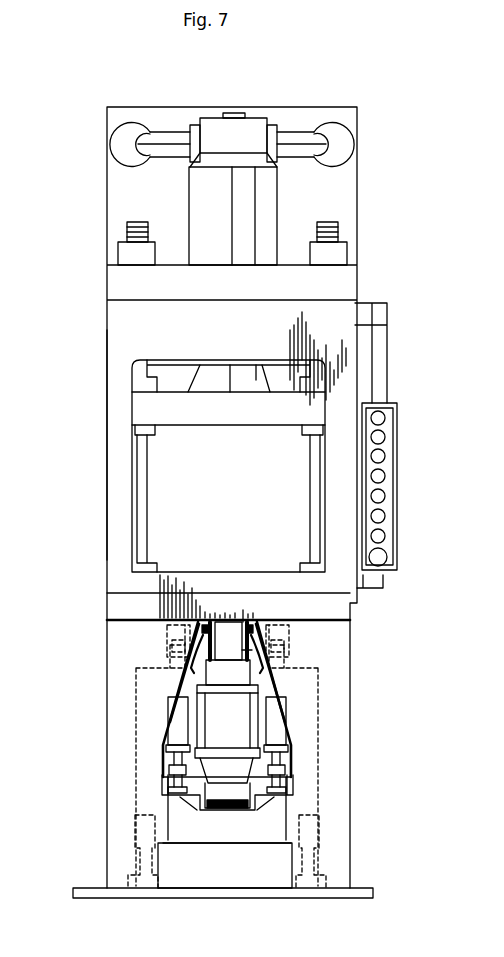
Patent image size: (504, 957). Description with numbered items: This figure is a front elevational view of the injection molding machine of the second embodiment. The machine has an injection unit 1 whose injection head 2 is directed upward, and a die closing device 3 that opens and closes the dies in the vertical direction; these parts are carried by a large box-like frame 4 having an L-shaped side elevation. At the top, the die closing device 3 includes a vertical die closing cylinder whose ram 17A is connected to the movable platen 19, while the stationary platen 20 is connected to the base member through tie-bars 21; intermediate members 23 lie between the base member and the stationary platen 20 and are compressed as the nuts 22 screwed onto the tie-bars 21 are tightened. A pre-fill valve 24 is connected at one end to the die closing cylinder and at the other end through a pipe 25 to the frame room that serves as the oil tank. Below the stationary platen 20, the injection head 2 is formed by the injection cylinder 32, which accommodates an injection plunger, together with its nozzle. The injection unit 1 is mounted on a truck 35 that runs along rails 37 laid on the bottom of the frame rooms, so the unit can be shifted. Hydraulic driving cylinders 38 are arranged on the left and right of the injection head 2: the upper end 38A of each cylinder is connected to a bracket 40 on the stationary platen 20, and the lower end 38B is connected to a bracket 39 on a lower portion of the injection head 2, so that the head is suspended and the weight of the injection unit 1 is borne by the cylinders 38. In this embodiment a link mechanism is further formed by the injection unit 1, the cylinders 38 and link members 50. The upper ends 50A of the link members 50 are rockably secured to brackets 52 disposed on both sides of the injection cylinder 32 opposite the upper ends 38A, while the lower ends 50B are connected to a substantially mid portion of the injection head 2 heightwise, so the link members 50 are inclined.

The injection unit 1 is at (238, 718).
The injection head 2 is at (165, 742).
The die closing device 3 is at (118, 376).
The frame 4 is at (350, 686).
The ram 17A is at (257, 378).
The movable platen 19 is at (195, 425).
The stationary platen 20 is at (107, 604).
The tie-bars 21 is at (147, 538).
The nuts 22 is at (118, 250).
The intermediate members 23 is at (107, 495).
The pre-fill valve 24 is at (191, 128).
The pipe 25 is at (159, 130).
The injection cylinder 32 is at (250, 655).
The truck 35 is at (262, 866).
The rails 37 is at (135, 866).
The hydraulic driving cylinders 38 is at (175, 745).
The upper end of cylinder 38A is at (172, 653).
The lower end of cylinder 38B is at (176, 790).
The bracket 39 is at (215, 812).
The bracket 40 is at (167, 640).
The link members 50 is at (190, 652).
The upper ends of link members 50A is at (200, 628).
The lower ends of link members 50B is at (195, 672).
The brackets 52 is at (198, 625).